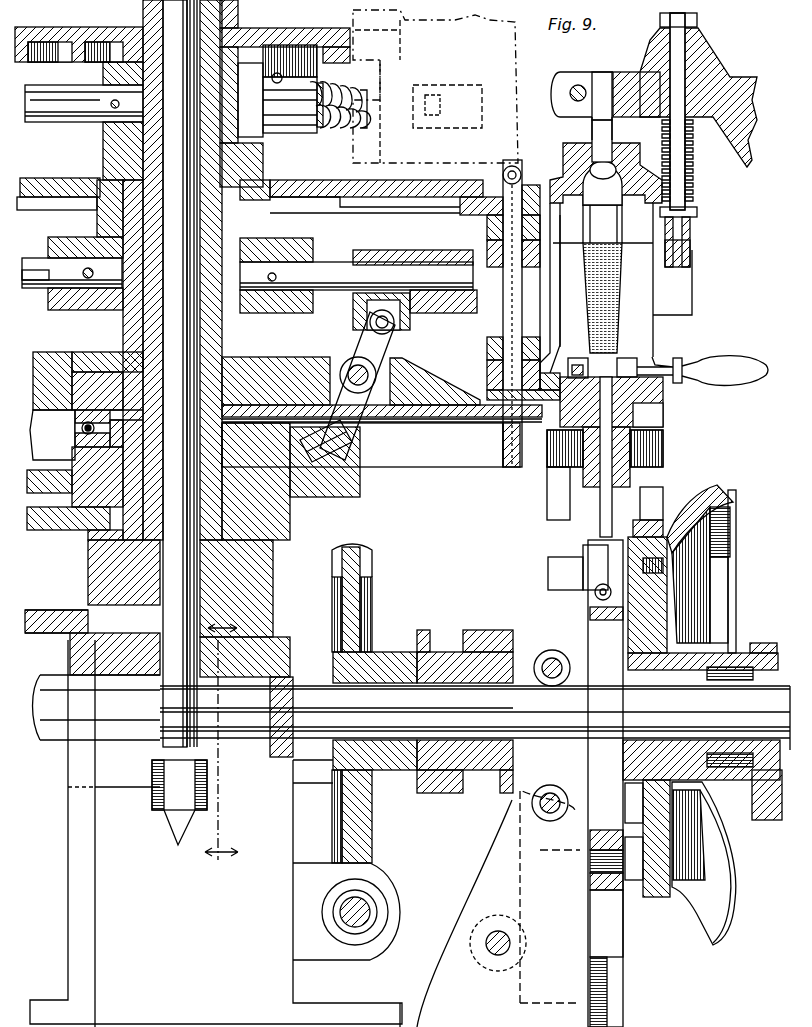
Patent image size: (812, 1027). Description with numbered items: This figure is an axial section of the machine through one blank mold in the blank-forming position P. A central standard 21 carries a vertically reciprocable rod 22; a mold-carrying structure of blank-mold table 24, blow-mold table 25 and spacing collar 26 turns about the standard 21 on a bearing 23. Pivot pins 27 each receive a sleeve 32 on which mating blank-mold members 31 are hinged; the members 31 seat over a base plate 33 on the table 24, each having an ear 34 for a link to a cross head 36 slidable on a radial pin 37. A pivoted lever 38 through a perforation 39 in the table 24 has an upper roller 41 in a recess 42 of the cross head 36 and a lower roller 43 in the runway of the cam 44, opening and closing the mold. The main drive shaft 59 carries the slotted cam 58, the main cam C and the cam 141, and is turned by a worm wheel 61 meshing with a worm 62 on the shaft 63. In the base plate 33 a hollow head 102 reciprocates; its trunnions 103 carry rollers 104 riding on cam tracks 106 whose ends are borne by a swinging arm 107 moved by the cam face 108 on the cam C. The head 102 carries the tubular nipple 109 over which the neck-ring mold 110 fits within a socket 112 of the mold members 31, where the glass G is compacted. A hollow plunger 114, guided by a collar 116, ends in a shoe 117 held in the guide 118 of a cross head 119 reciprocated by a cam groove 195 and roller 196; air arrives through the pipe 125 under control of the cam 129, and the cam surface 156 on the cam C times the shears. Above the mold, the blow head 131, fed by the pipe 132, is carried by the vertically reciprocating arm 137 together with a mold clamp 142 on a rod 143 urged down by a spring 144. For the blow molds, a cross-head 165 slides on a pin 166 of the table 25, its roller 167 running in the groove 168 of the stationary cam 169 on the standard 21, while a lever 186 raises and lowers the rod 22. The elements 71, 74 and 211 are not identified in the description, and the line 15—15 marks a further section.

The central standard 21 is at (232, 27).
The vertically reciprocable rod 22 is at (150, 725).
The bearing 23 is at (75, 443).
The blank-mold table 24 is at (300, 370).
The blow-mold table 25 is at (352, 200).
The spacing collar 26 is at (233, 229).
The pivot pins 27 is at (503, 326).
The blank mold members 31 is at (668, 333).
The sleeve 32 is at (543, 345).
The base plate 33 is at (520, 443).
The ear 34 is at (487, 236).
The cross head 36 is at (428, 252).
The radially projecting pin 37 is at (45, 262).
The pivoted lever 38 is at (360, 410).
The perforation 39 is at (388, 380).
The roller 41 is at (353, 308).
The recess 42 is at (367, 290).
The roller 43 is at (352, 462).
The cam 44 is at (330, 492).
The cam 58 is at (452, 652).
The main drive shaft 59 is at (388, 670).
The worm wheel 61 is at (372, 562).
The worm 62 is at (385, 877).
The shaft 63 is at (358, 932).
The flange 71 is at (88, 590).
The cylinder 74 is at (503, 470).
The hollow head 102 is at (663, 445).
The radial trunnions 103 is at (660, 462).
The rollers 104 is at (655, 478).
The cam tracks 106 is at (548, 522).
The swinging arm 107 is at (735, 513).
The cam face 108 is at (600, 538).
The nipple 109 is at (663, 402).
The neck ring mold 110 is at (583, 360).
The socket 112 is at (625, 357).
The hollow plunger 114 is at (612, 527).
The collar 116 is at (588, 487).
The shoe 117 is at (595, 593).
The guide 118 is at (548, 581).
The cross head 119 is at (590, 617).
The air supply pipe 125 is at (700, 560).
The cam 129 is at (687, 640).
The blow head 131 is at (562, 180).
The pipe 132 is at (624, 72).
The vertically reciprocating arm 137 is at (723, 62).
The cam 141 is at (765, 820).
The mold clamp 142 is at (697, 260).
The vertically movable rod 143 is at (693, 173).
The spring 144 is at (693, 147).
The cam surface 156 is at (725, 490).
The cross-head 165 is at (302, 133).
The radially projecting pin 166 is at (82, 122).
The roller 167 is at (298, 48).
The cam groove 168 is at (60, 45).
The cam 169 is at (112, 35).
The lever 186 is at (176, 848).
The cam groove 195 is at (595, 642).
The roller 196 is at (600, 892).
The section line 15 is at (221, 743).
The blank-forming position P is at (690, 245).
The glass G is at (615, 296).
The main cam C is at (660, 613).
The block 211 is at (695, 285).